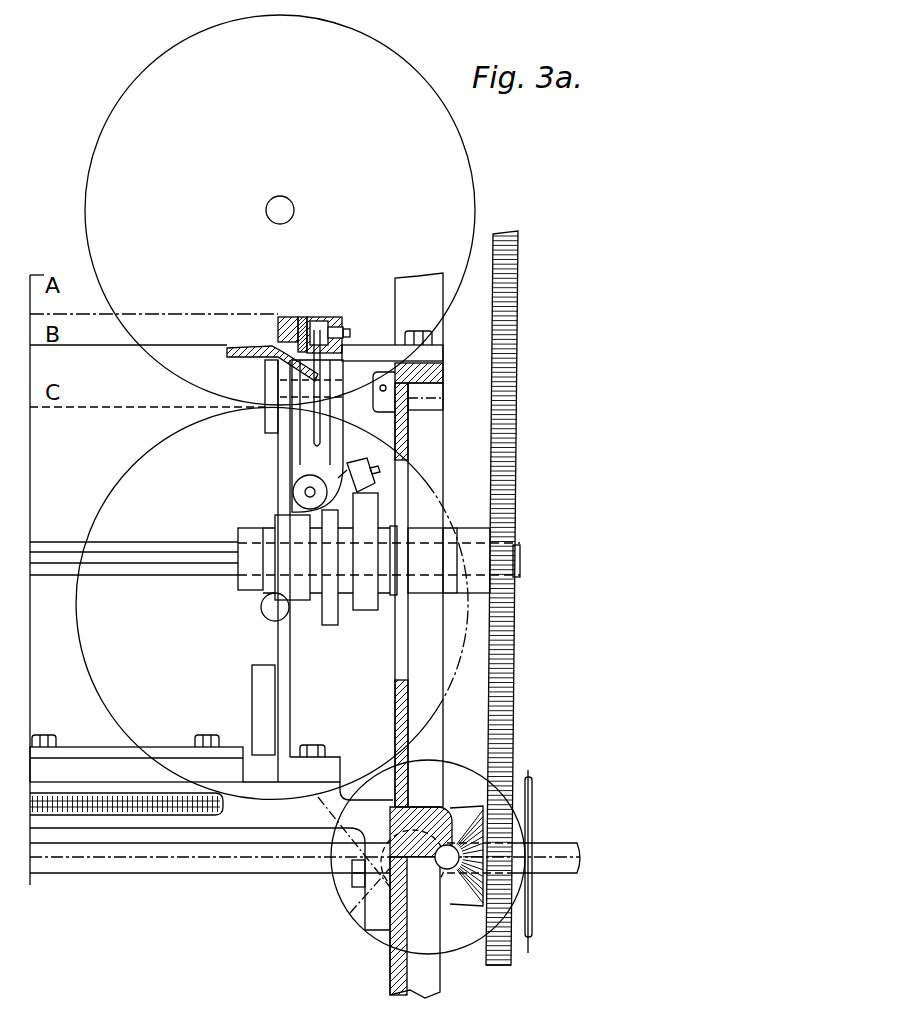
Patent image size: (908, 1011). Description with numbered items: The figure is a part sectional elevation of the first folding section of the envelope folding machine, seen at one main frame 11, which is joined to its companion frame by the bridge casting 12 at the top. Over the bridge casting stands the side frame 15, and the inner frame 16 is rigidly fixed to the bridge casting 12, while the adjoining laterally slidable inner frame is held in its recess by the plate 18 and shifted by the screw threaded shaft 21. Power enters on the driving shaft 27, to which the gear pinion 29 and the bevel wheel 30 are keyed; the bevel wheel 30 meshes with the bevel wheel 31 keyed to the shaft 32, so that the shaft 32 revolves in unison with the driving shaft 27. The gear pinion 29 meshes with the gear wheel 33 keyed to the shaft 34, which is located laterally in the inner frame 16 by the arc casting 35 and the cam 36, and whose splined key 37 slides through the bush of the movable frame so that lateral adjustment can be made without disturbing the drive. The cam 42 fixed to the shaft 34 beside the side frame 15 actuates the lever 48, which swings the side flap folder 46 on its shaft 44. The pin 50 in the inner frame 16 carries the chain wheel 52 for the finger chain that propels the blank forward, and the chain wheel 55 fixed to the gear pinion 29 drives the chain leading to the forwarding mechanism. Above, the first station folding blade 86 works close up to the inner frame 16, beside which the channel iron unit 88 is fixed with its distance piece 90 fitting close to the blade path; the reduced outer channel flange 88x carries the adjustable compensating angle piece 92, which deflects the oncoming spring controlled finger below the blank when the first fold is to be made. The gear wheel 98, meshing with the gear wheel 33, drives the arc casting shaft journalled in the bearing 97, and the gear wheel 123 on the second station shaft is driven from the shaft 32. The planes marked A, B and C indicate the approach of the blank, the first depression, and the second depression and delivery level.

The frame 11 is at (422, 978).
The bridge casting 12 is at (338, 776).
The side frame 15 is at (396, 690).
The inner frame 16 is at (281, 690).
The plate 18 is at (84, 756).
The screw threaded shaft 21 is at (157, 814).
The driving shaft 27 is at (88, 862).
The gear pinion 29 is at (498, 962).
The bevel wheel 30 is at (468, 899).
The bevel wheel 31 is at (434, 832).
The shaft 32 is at (364, 929).
The gear wheel 33 is at (515, 656).
The shaft 34 is at (158, 566).
The arc casting 35 is at (246, 586).
The cam 36 is at (328, 612).
The splined key 37 is at (112, 560).
The cam 42 is at (365, 597).
The shaft 44 is at (304, 491).
The side flap folder 46 is at (330, 445).
The lever 48 is at (359, 464).
The pin 50 is at (268, 386).
The chain wheel 52 is at (322, 346).
The chain wheel 55 is at (533, 912).
The first station folding blade 86 is at (240, 350).
The channel iron unit 88 is at (302, 318).
The outer channel flange 88x is at (351, 332).
The distance piece 90 is at (287, 318).
The compensating angle piece 92 is at (322, 318).
The bearing 97 is at (413, 287).
The gear wheel 98 is at (497, 303).
The gear wheel 123 is at (150, 456).